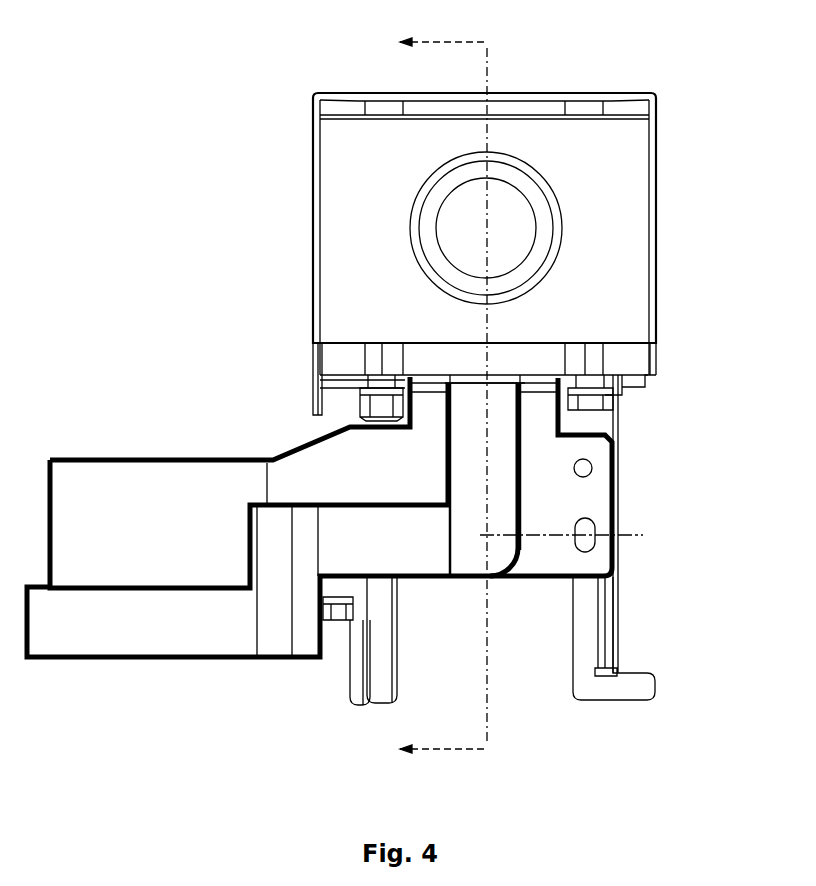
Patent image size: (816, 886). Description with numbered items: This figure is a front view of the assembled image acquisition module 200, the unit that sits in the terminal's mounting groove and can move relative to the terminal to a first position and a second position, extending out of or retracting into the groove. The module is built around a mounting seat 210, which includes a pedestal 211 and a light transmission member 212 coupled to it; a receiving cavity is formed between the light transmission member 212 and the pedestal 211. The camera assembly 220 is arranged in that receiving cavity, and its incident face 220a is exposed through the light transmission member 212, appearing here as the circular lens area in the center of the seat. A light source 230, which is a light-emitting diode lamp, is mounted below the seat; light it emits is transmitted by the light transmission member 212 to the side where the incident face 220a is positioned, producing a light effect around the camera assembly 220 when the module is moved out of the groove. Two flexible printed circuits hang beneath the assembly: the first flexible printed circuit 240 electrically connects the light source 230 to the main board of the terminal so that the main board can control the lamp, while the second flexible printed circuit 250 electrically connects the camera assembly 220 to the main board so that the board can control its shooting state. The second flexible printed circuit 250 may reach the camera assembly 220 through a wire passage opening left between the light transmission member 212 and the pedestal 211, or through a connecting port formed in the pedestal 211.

The image acquisition module 200 is at (173, 32).
The mounting seat 210 is at (560, 254).
The pedestal 211 is at (635, 107).
The light transmission member 212 is at (628, 157).
The camera assembly 220 is at (412, 257).
The incident face 220a is at (463, 218).
The light source 230 is at (455, 380).
The first flexible printed circuit 240 is at (183, 637).
The second flexible printed circuit 250 is at (413, 453).